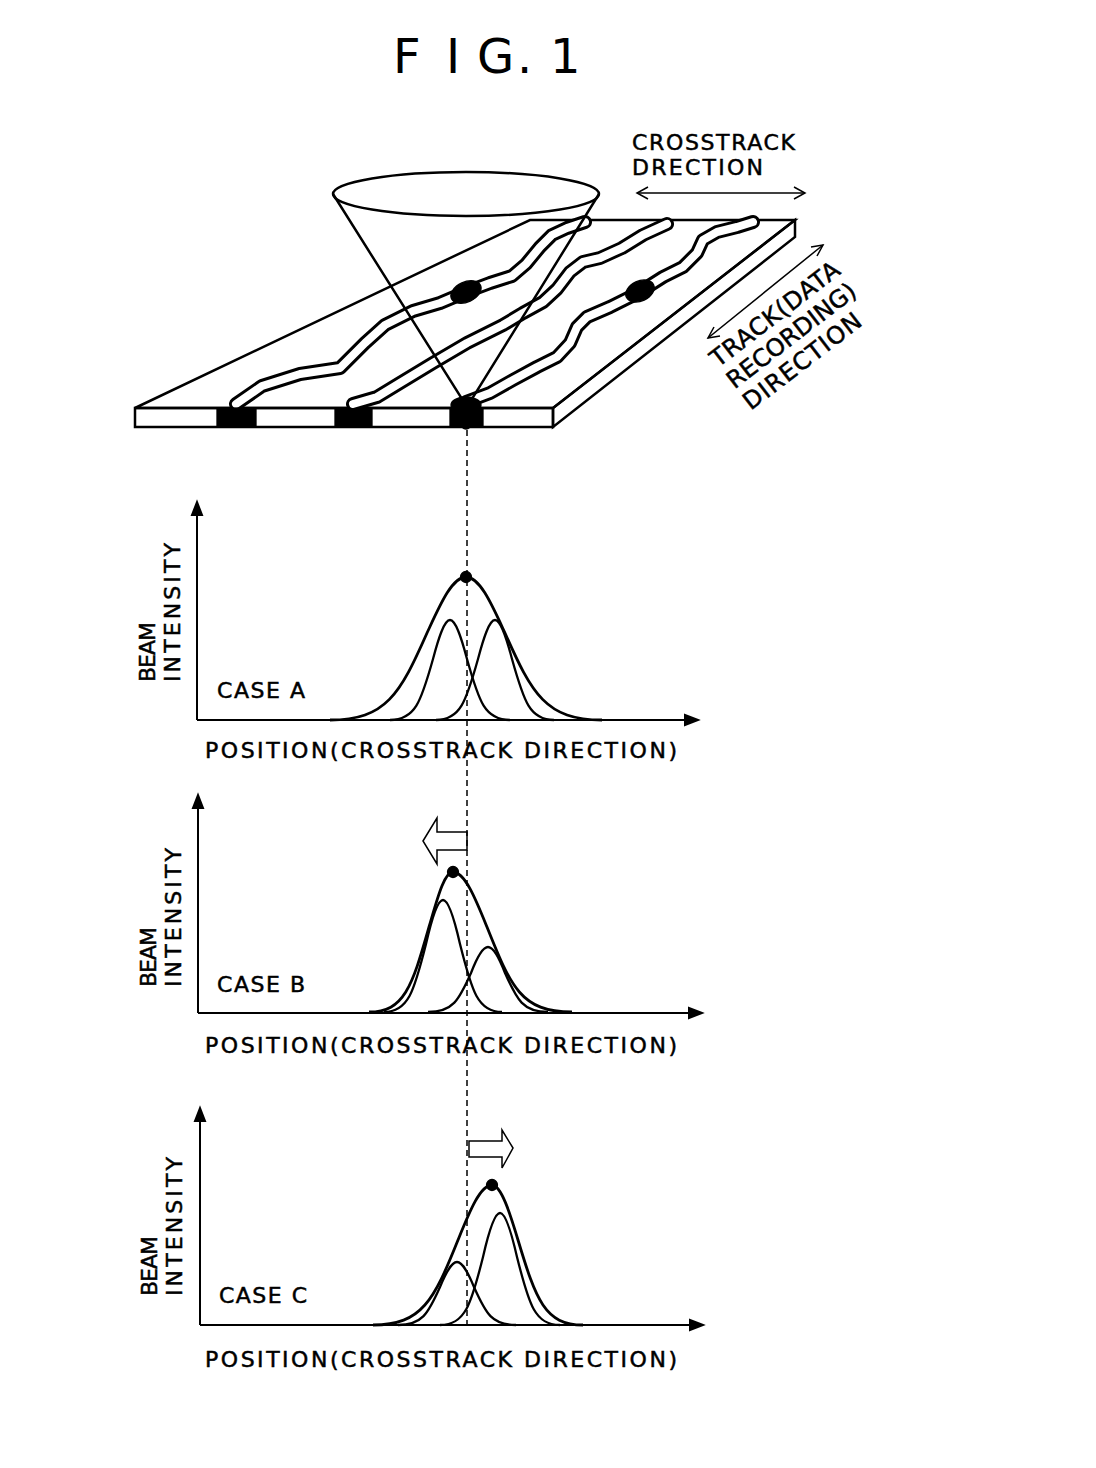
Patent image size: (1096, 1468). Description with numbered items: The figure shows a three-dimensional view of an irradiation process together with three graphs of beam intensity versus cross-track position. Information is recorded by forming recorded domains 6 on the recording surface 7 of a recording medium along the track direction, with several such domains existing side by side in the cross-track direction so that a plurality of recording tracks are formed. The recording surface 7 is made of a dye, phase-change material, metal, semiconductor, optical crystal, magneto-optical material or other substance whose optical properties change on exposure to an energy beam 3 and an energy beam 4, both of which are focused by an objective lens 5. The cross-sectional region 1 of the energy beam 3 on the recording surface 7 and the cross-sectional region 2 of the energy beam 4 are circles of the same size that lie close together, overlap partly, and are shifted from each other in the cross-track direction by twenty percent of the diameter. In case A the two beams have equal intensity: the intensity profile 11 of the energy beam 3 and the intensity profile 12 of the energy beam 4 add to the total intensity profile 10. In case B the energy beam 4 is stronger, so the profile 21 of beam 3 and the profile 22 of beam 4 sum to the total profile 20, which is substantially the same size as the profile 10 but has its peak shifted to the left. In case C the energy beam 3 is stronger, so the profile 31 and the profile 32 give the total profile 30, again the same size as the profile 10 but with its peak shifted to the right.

The cross-sectional region 1 is at (503, 405).
The cross-sectional region 2 is at (427, 393).
The energy beam 3 is at (522, 340).
The energy beam 4 is at (370, 260).
The objective lens 5 is at (345, 185).
The recorded domains 6 is at (228, 396).
The recording surface 7 is at (298, 343).
The total intensity profile 10 is at (483, 598).
The intensity profile 11 is at (500, 655).
The intensity profile 12 is at (443, 663).
The total intensity profile 20 is at (483, 907).
The intensity profile 21 is at (507, 958).
The intensity profile 22 is at (442, 943).
The total intensity profile 30 is at (508, 1200).
The intensity profile 31 is at (508, 1267).
The intensity profile 32 is at (447, 1285).